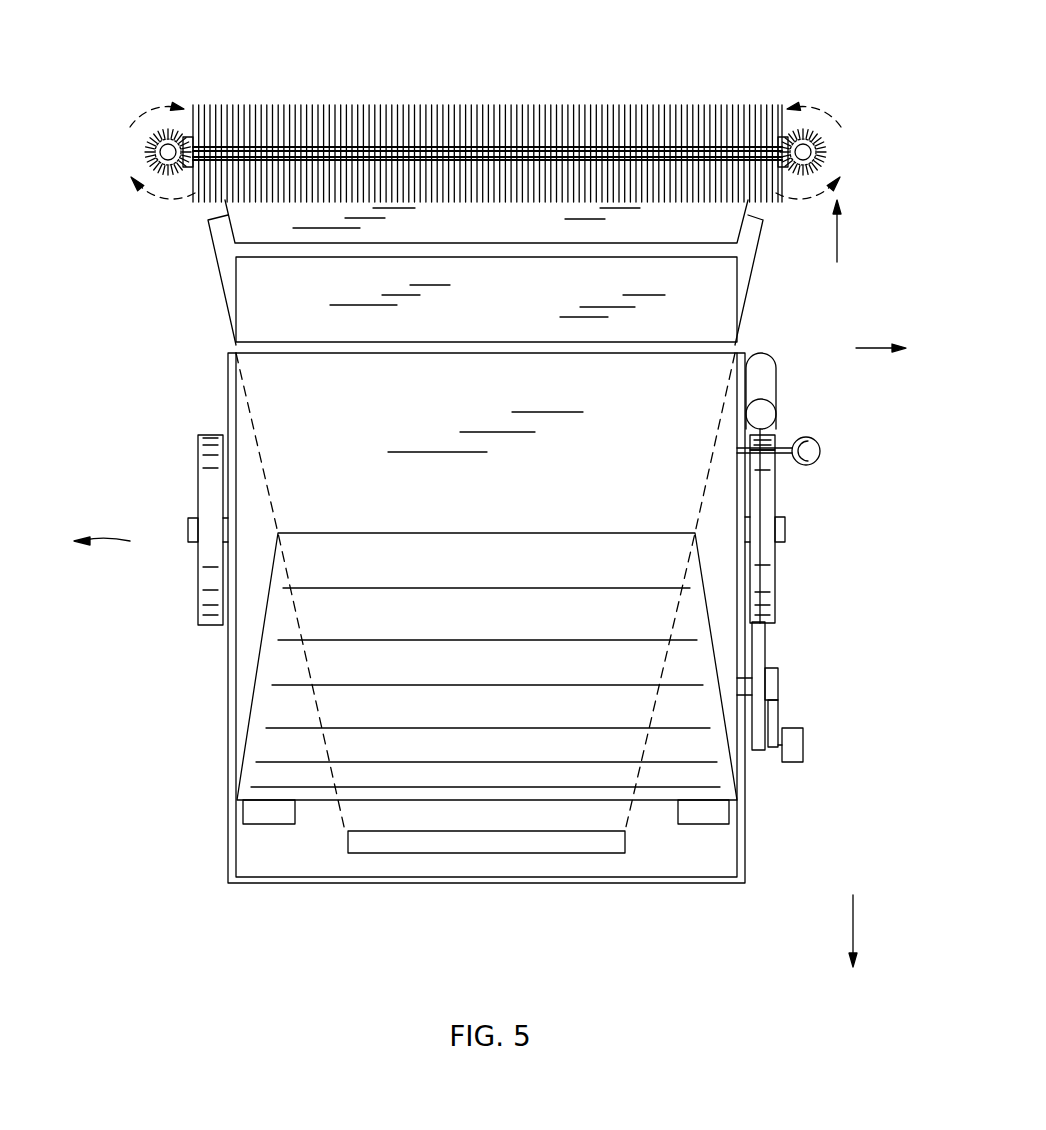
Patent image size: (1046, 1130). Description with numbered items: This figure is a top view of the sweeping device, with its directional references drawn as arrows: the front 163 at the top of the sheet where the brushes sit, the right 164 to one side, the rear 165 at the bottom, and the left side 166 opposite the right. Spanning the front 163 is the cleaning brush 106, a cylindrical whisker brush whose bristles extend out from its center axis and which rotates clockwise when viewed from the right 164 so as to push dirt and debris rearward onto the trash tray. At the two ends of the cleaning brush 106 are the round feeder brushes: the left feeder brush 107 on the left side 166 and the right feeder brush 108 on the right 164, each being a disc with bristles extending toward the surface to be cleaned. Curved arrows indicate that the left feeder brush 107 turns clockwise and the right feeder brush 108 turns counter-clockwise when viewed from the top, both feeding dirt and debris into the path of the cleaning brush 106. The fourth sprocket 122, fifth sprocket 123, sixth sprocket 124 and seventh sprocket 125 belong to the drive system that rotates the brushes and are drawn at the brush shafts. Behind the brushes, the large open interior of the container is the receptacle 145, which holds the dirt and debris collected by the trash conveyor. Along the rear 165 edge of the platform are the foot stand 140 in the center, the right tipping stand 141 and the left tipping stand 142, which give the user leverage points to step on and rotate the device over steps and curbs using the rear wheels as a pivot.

The cleaning brush 106 is at (330, 105).
The left feeder brush 107 is at (146, 152).
The right feeder brush 108 is at (826, 158).
The fourth sprocket 122 is at (782, 140).
The fifth sprocket 123 is at (850, 140).
The sixth sprocket 124 is at (190, 135).
The seventh sprocket 125 is at (152, 145).
The foot stand 140 is at (505, 838).
The right tipping stand 141 is at (705, 813).
The left tipping stand 142 is at (273, 813).
The receptacle 145 is at (655, 487).
The front 163 is at (871, 231).
The right 164 is at (879, 327).
The rear 165 is at (883, 931).
The left side 166 is at (110, 563).